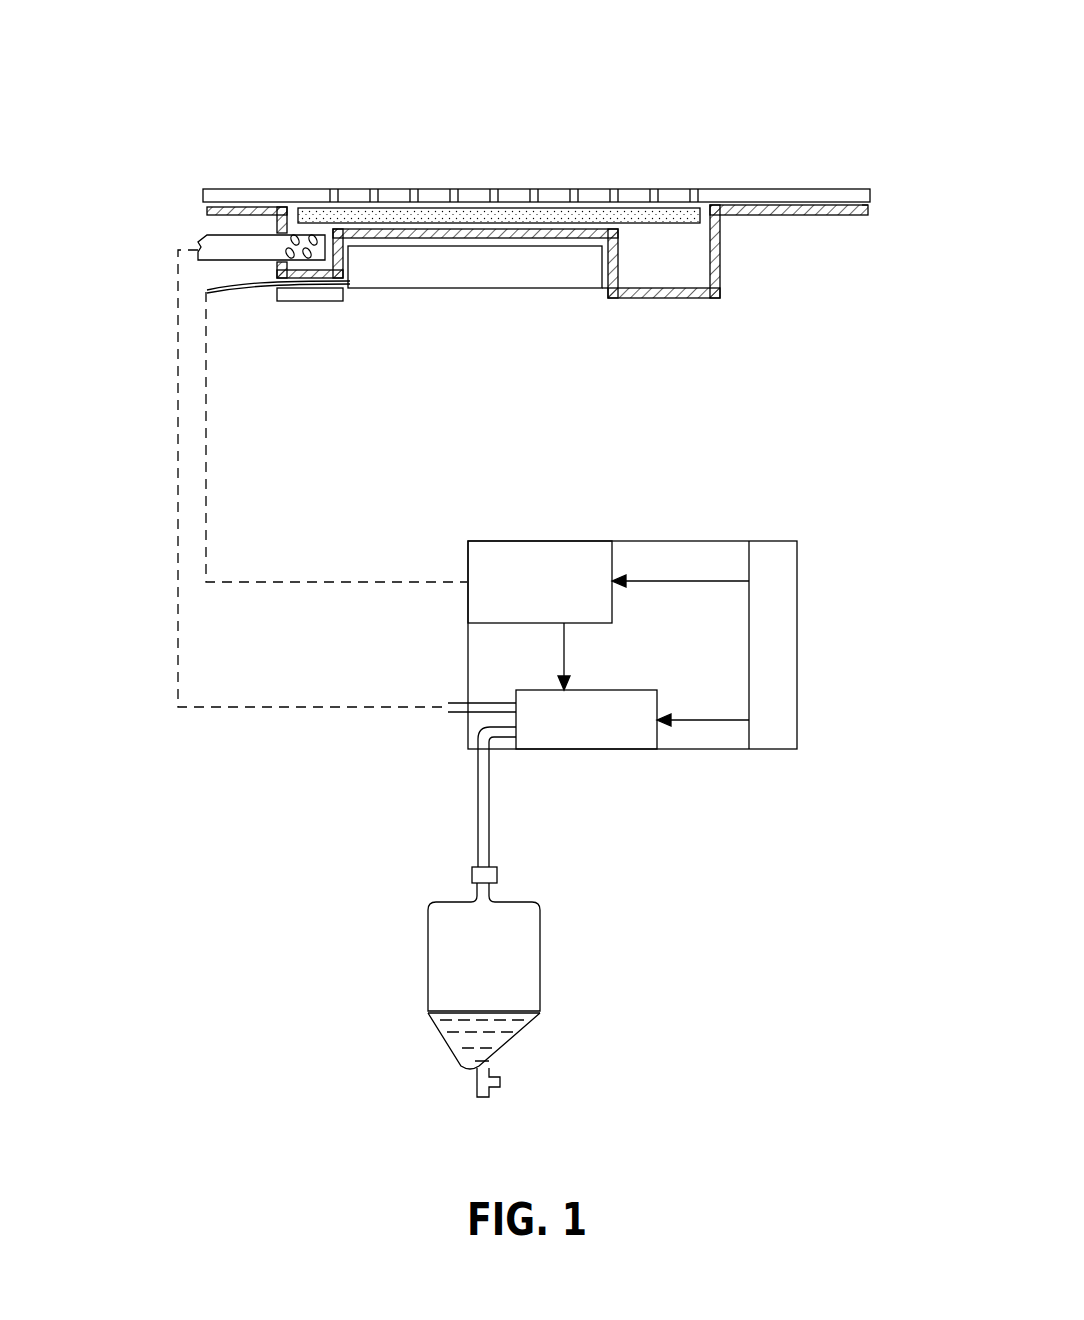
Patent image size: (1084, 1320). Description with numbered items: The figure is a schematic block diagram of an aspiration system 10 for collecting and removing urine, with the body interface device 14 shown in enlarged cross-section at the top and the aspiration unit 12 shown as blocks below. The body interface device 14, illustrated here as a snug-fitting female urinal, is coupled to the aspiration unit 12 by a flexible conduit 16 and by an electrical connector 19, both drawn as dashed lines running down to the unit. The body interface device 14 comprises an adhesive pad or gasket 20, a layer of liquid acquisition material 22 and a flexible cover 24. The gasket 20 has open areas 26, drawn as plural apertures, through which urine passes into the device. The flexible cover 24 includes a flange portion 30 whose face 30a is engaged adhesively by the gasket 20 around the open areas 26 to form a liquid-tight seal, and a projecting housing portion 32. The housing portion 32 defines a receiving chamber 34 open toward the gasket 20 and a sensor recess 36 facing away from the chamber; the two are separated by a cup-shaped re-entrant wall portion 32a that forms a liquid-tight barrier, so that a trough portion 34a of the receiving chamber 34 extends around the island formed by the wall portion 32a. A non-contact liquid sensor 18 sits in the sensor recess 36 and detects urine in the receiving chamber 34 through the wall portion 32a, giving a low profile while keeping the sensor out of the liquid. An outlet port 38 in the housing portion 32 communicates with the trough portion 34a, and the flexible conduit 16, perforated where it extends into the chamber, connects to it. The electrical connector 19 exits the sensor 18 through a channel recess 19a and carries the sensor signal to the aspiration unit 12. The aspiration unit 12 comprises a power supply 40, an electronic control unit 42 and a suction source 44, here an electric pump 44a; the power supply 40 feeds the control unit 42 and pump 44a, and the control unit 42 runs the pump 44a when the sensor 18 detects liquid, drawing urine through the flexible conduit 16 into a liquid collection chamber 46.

The aspiration system 10 is at (396, 66).
The aspiration unit 12 is at (714, 786).
The body interface device 14 is at (673, 62).
The flexible conduit 16 is at (180, 307).
The liquid sensor 18 is at (466, 278).
The electrical connector 19 is at (206, 500).
The channel recess 19a is at (303, 292).
The gasket 20 is at (785, 193).
The liquid acquisition material 22 is at (675, 220).
The flexible cover 24 is at (711, 308).
The open areas 26 is at (687, 188).
The flange portion 30 is at (838, 216).
The face 30a is at (843, 205).
The housing portion 32 is at (642, 298).
The wall portion 32a is at (535, 238).
The receiving chamber 34 is at (295, 210).
The trough portion 34a is at (688, 258).
The sensor recess 36 is at (600, 306).
The outlet port 38 is at (277, 233).
The power supply 40 is at (667, 704).
The electronic control unit 42 is at (540, 582).
The suction source 44 is at (567, 778).
The electric pump 44a is at (602, 749).
The liquid collection chamber 46 is at (522, 960).